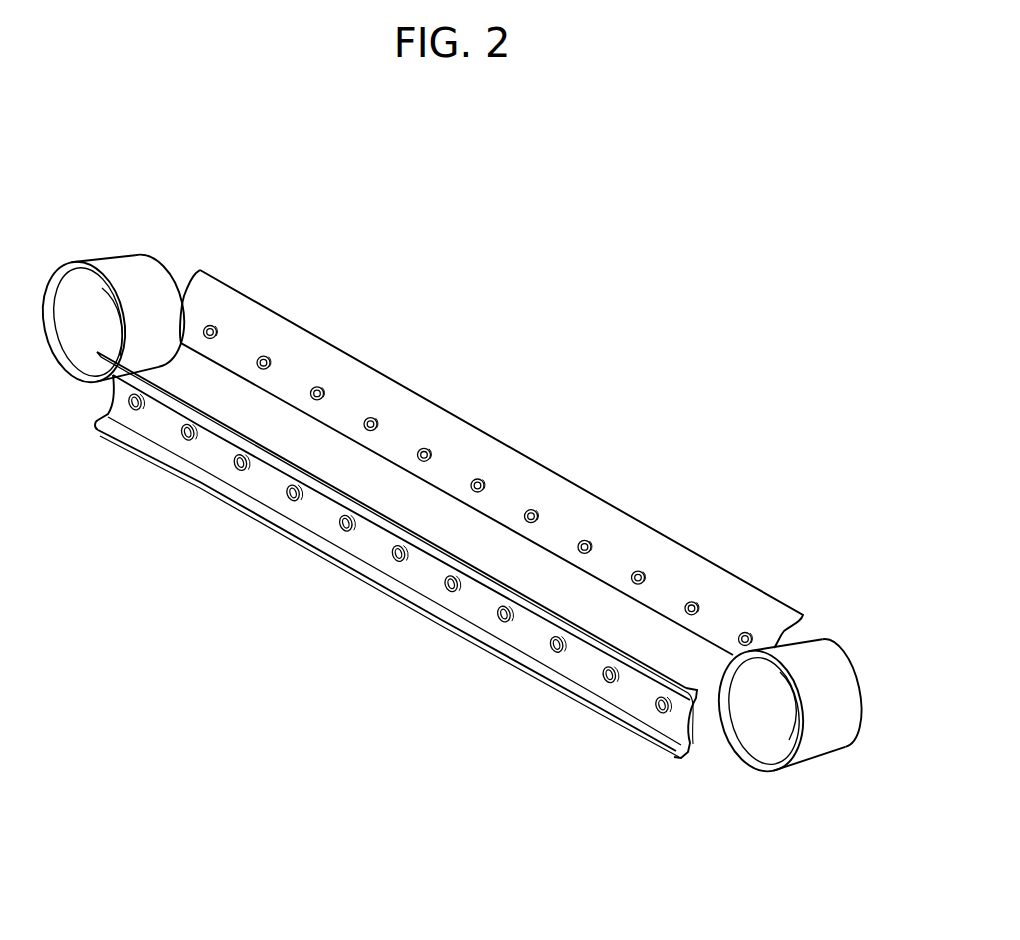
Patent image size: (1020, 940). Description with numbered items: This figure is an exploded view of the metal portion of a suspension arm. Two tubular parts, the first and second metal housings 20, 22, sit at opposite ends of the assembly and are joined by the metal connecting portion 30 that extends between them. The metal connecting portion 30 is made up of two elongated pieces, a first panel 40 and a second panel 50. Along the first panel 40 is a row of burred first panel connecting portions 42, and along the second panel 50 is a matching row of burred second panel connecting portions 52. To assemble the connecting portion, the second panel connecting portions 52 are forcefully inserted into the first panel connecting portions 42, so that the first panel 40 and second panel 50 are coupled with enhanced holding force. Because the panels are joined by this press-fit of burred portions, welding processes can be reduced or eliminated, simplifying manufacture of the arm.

The first metal housing 20 is at (128, 258).
The second metal housing 22 is at (754, 752).
The metal connecting portion 30 is at (491, 462).
The first panel 40 is at (396, 555).
The first panel connecting portion 42 is at (446, 593).
The second panel 50 is at (645, 532).
The second panel connecting portion 52 is at (585, 539).